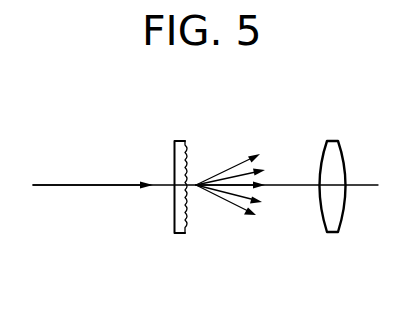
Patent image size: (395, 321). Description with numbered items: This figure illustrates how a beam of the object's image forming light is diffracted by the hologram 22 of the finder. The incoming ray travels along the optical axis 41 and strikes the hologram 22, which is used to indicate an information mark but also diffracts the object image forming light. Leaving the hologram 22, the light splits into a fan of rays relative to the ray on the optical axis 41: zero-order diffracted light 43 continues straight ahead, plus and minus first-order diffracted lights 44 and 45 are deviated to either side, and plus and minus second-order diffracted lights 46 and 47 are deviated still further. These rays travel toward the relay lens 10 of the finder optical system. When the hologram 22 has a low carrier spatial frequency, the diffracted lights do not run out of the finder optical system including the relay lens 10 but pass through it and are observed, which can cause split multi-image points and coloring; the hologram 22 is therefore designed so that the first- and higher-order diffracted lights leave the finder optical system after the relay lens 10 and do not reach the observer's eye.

The relay lens 10 is at (333, 233).
The hologram 22 is at (187, 147).
The optical axis 41 is at (90, 185).
The zero-order diffracted light 43 is at (245, 187).
The first-order diffracted light 44 is at (196, 185).
The first-order diffracted light 45 is at (196, 185).
The second-order diffracted light 46 is at (242, 165).
The second-order diffracted light 47 is at (233, 210).